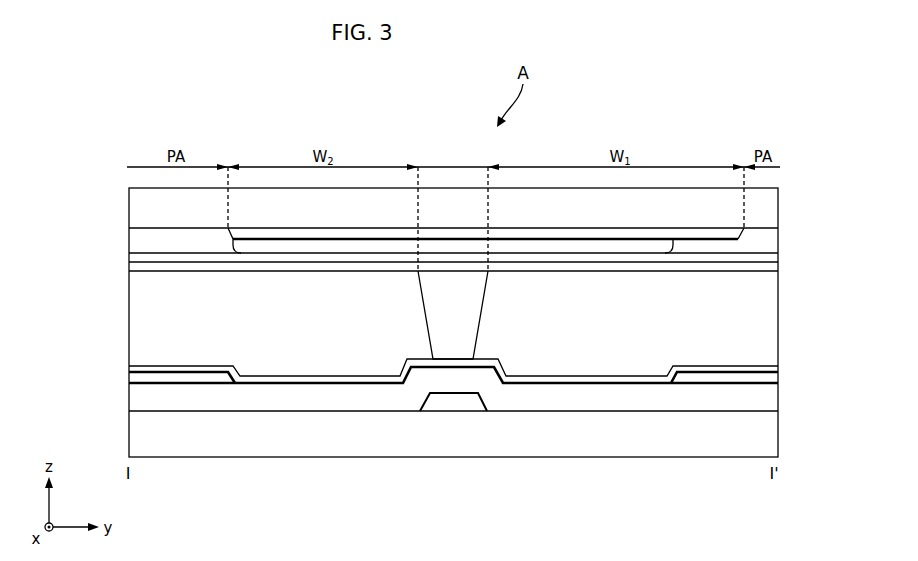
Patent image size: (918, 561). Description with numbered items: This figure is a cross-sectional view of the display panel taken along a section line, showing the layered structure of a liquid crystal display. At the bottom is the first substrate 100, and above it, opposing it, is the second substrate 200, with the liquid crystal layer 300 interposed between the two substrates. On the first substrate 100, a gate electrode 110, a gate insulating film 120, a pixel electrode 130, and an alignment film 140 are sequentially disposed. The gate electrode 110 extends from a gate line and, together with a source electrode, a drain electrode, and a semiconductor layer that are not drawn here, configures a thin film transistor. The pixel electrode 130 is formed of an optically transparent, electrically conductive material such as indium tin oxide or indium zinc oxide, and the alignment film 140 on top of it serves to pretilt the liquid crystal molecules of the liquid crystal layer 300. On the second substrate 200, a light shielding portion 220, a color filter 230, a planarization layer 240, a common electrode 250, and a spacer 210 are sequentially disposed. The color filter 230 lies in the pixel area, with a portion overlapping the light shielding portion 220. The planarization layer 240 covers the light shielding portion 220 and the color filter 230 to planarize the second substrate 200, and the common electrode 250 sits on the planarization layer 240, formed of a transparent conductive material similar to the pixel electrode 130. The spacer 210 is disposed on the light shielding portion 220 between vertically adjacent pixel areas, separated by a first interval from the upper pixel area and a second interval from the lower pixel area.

The first substrate 100 is at (762, 434).
The gate electrode 110 is at (449, 402).
The gate insulating film 120 is at (580, 398).
The pixel electrode 130 is at (178, 378).
The alignment film 140 is at (320, 380).
The second substrate 200 is at (762, 207).
The spacer 210 is at (452, 293).
The light shielding portion 220 is at (385, 235).
The color filter 230 is at (140, 240).
The planarization layer 240 is at (558, 250).
The common electrode 250 is at (762, 268).
The liquid crystal layer 300 is at (762, 320).